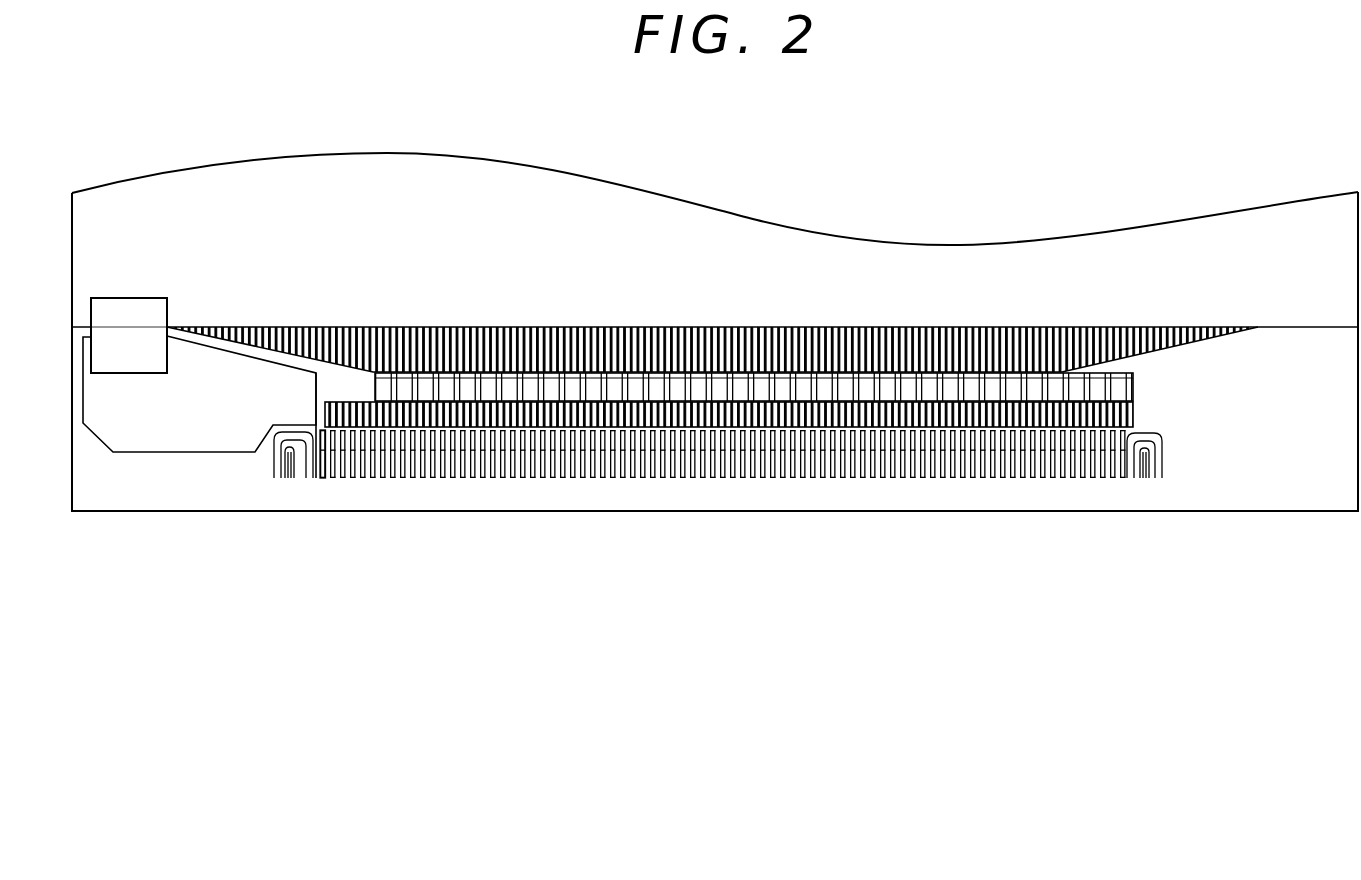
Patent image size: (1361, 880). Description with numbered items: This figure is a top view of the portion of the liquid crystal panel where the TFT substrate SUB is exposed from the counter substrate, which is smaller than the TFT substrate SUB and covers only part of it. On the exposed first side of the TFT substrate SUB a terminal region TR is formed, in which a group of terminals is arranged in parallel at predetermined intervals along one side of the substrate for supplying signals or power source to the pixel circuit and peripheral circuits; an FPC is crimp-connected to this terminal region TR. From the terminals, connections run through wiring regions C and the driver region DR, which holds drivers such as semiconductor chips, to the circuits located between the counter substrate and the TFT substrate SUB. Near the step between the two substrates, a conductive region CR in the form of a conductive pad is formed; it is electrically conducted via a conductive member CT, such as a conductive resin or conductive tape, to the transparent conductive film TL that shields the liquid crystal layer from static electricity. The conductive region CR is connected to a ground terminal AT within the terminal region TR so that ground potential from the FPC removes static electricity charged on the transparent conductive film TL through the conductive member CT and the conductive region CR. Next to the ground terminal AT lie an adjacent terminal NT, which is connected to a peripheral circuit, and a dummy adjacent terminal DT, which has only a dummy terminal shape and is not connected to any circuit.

The TFT substrate SUB is at (1312, 497).
The transparent conductive film TL is at (1098, 257).
The conductive member CT is at (128, 307).
The conductive region CR is at (157, 440).
The wiring region C is at (1207, 342).
The driver region DR is at (1145, 372).
The terminal region TR is at (1176, 450).
The dummy adjacent terminal DT is at (308, 478).
The ground terminal AT is at (317, 478).
The adjacent terminal NT is at (325, 478).